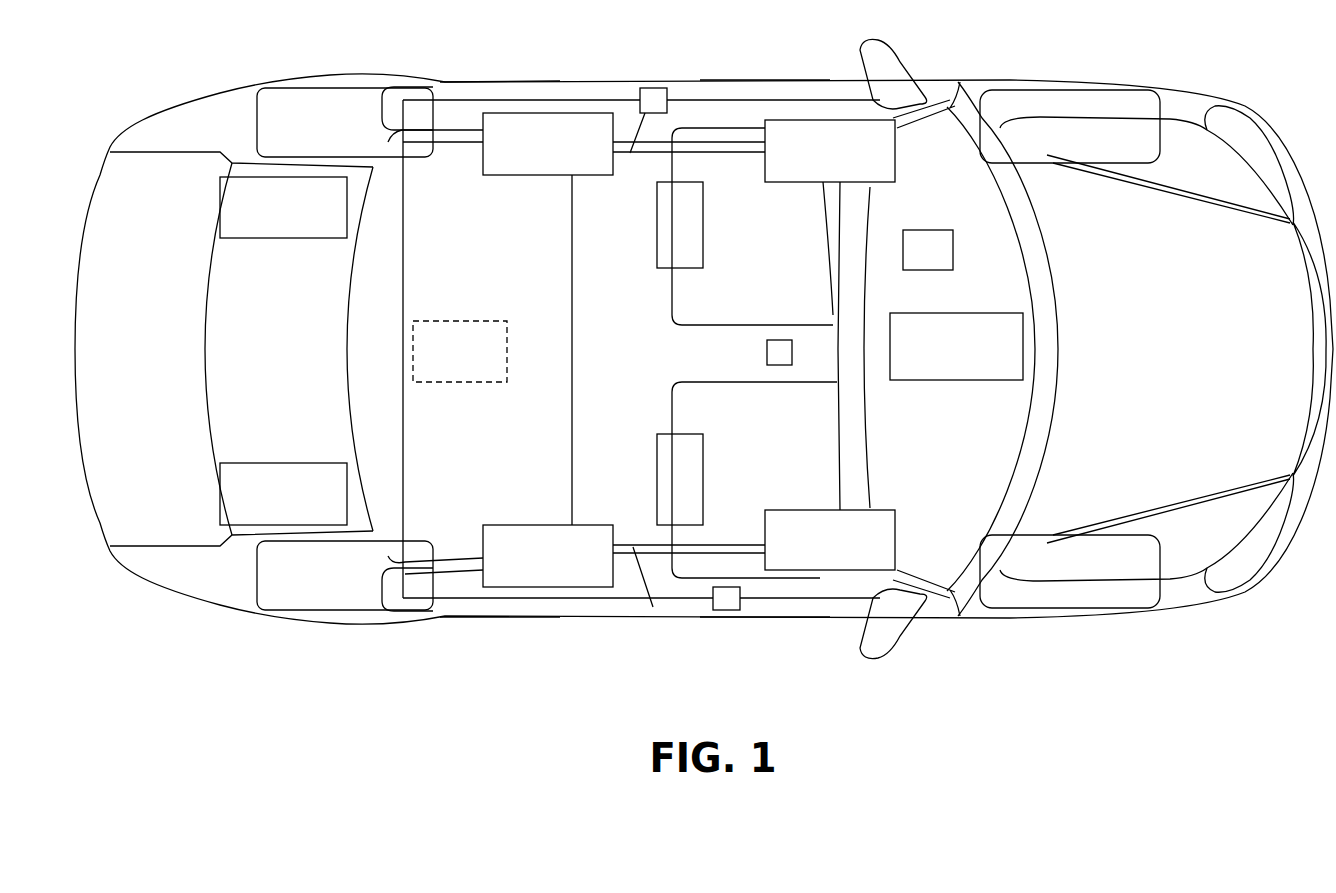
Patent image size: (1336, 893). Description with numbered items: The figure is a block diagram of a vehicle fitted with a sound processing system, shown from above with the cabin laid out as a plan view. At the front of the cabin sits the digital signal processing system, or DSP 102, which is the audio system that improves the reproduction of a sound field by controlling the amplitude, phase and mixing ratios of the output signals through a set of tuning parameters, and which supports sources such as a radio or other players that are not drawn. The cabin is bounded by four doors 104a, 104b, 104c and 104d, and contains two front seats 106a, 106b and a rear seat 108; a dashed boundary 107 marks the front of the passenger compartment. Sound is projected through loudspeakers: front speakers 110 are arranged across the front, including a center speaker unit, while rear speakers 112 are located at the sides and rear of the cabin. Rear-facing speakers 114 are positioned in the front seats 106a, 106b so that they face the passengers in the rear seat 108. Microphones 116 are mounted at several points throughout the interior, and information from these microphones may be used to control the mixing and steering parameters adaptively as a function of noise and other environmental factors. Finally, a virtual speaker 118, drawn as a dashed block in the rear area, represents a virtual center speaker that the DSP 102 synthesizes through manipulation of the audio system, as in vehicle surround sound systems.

The digital signal processing system (DSP) 102 is at (953, 250).
The door 104a is at (767, 80).
The door 104b is at (773, 617).
The door 104c is at (503, 82).
The door 104d is at (507, 617).
The front seat 106a is at (752, 226).
The front seat 106b is at (754, 480).
The dashboard / windshield boundary 107 is at (1040, 438).
The rear seat 108 is at (355, 349).
The front speakers 110 is at (785, 120).
The rear speakers 112 is at (260, 238).
The rear-facing speakers 114 is at (680, 353).
The microphones 116 is at (654, 88).
The virtual speaker 118 is at (488, 321).